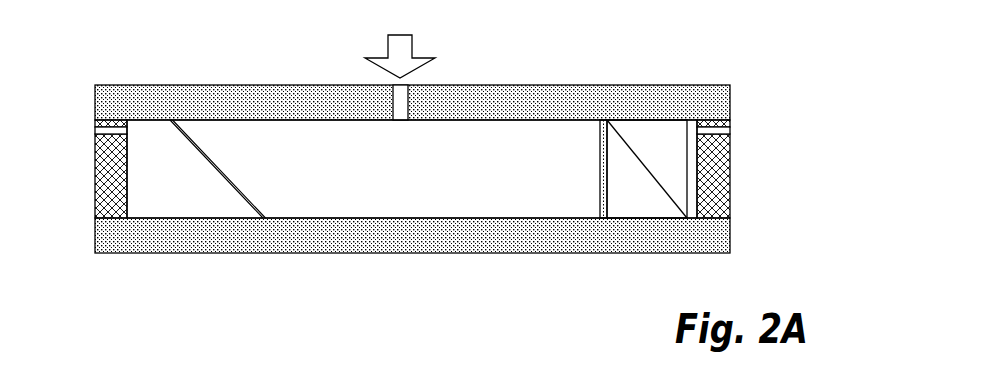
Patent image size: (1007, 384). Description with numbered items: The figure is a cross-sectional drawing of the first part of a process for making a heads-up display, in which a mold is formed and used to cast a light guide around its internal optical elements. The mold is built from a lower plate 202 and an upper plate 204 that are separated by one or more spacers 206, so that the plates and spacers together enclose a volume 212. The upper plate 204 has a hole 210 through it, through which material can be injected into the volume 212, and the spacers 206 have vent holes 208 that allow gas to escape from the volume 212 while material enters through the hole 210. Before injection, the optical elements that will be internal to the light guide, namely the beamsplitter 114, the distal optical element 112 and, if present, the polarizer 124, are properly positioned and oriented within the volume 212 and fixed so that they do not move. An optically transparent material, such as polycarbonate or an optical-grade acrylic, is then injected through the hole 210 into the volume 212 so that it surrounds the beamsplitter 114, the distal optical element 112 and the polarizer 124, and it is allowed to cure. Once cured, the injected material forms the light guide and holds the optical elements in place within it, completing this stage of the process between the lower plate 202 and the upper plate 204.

The lower plate 202 is at (358, 246).
The upper plate 204 is at (256, 100).
The spacers 206 is at (95, 193).
The vent holes 208 is at (100, 131).
The hole 210 is at (400, 103).
The volume 212 is at (412, 169).
The distal optical element 112 is at (212, 172).
The beamsplitter 114 is at (617, 195).
The polarizer 124 is at (603, 148).